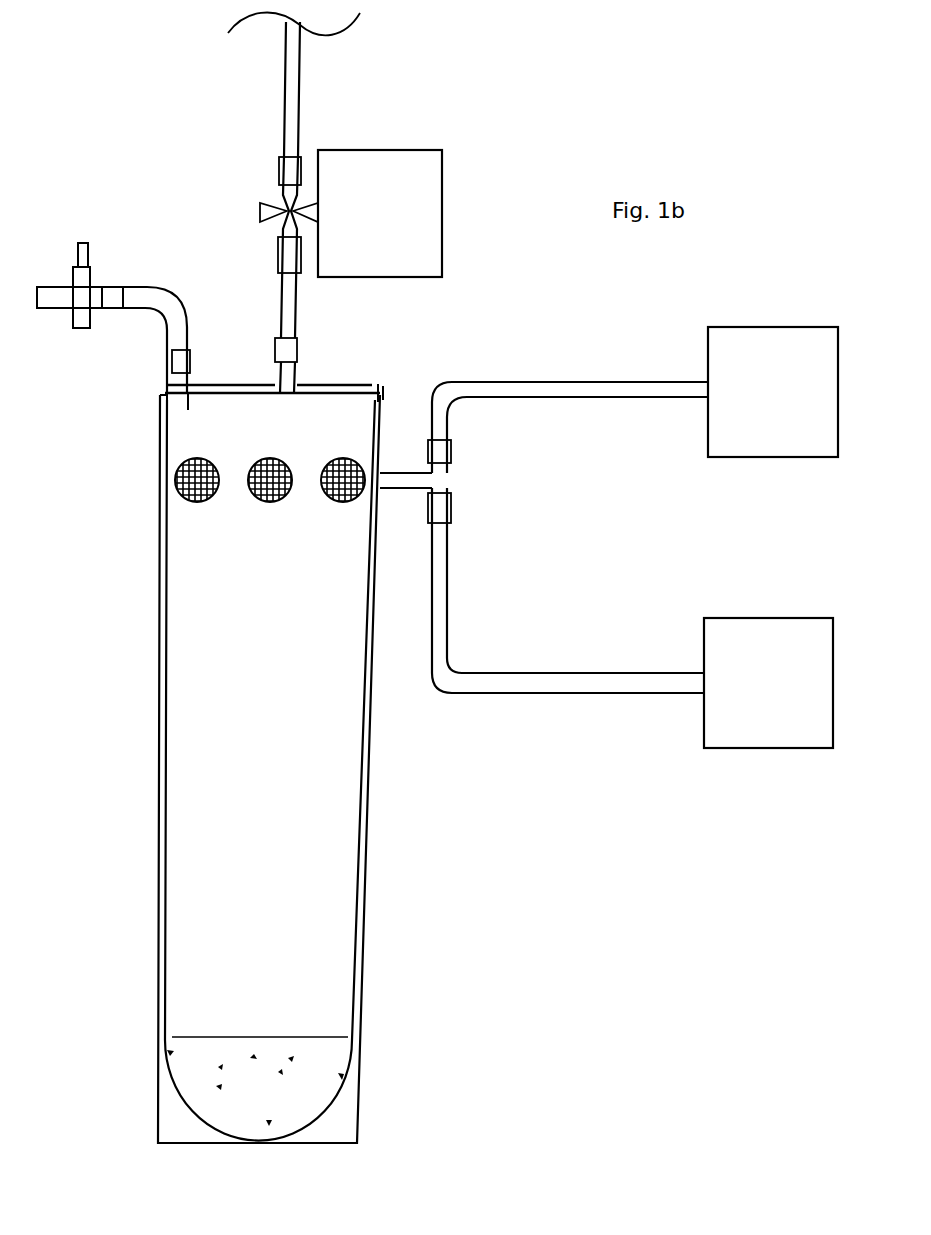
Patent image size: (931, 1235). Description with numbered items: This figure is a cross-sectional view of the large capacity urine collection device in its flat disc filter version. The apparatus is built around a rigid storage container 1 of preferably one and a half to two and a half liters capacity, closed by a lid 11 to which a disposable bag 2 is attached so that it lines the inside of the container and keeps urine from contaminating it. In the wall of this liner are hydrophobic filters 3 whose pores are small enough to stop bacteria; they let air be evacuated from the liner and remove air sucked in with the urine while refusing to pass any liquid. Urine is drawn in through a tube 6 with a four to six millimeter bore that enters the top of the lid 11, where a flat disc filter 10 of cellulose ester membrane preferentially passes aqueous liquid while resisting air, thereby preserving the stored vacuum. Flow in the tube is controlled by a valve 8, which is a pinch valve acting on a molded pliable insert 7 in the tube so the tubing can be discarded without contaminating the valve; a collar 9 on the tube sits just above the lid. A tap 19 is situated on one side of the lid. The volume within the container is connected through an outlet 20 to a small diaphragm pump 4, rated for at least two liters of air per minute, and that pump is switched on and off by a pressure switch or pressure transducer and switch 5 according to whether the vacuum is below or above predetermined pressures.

The rigid storage container 1 is at (358, 1126).
The bag 2 is at (343, 1080).
The hydrophobic filter 3 is at (183, 497).
The diaphragm pump 4 is at (630, 618).
The pressure switch or pressure transducer and switch 5 is at (633, 400).
The tube 6 is at (293, 125).
The molded pliable insert 7 is at (290, 192).
The valve 8 is at (380, 213).
The connector collar 9 is at (287, 369).
The flat disc filter 10 is at (352, 389).
The lid 11 is at (384, 393).
The tap 19 is at (88, 284).
The outlet 20 is at (407, 481).